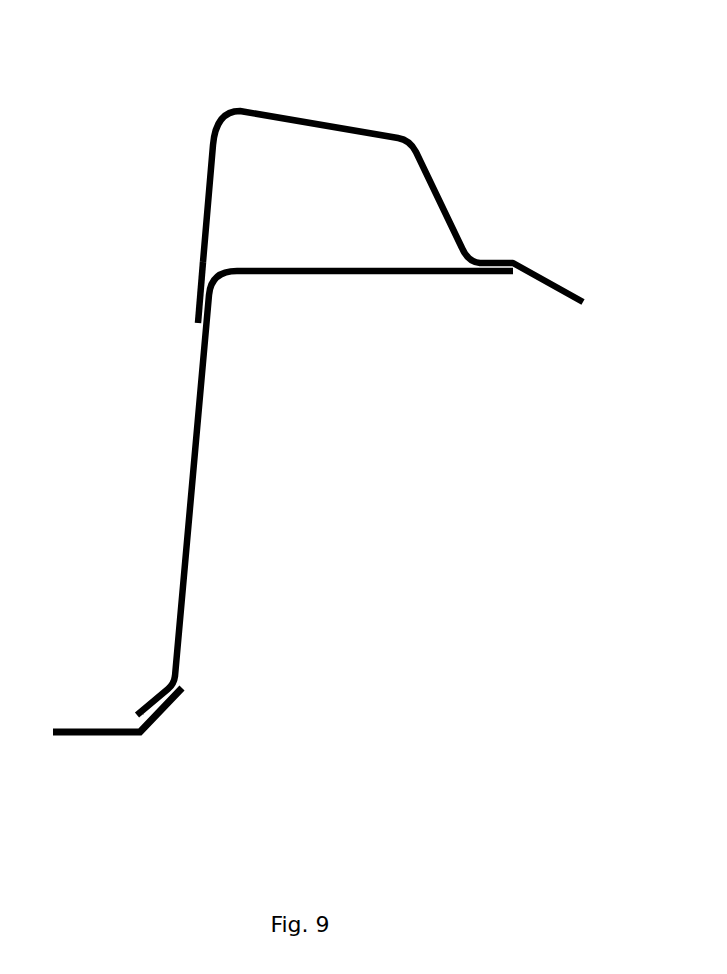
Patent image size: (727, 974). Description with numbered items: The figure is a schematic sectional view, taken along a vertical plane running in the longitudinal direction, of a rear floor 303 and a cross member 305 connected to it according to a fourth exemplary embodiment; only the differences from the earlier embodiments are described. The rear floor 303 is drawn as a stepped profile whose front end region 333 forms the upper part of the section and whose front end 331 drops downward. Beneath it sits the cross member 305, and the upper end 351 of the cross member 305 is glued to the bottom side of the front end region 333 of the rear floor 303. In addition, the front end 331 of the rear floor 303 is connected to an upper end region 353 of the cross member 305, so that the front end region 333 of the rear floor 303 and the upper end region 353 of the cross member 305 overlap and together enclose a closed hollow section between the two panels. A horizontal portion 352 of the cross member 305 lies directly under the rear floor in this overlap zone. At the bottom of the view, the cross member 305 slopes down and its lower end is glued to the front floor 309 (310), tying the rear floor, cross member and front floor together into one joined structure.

The rear floor 303 is at (497, 137).
The cross member 305 is at (298, 393).
The front floor 309 is at (83, 735).
The front floor 310 is at (117, 710).
The front end 331 is at (193, 300).
The front end region 333 is at (320, 120).
The upper end 351 is at (497, 273).
The horizontal portion of lower member 352 is at (315, 275).
The upper end region 353 is at (207, 338).